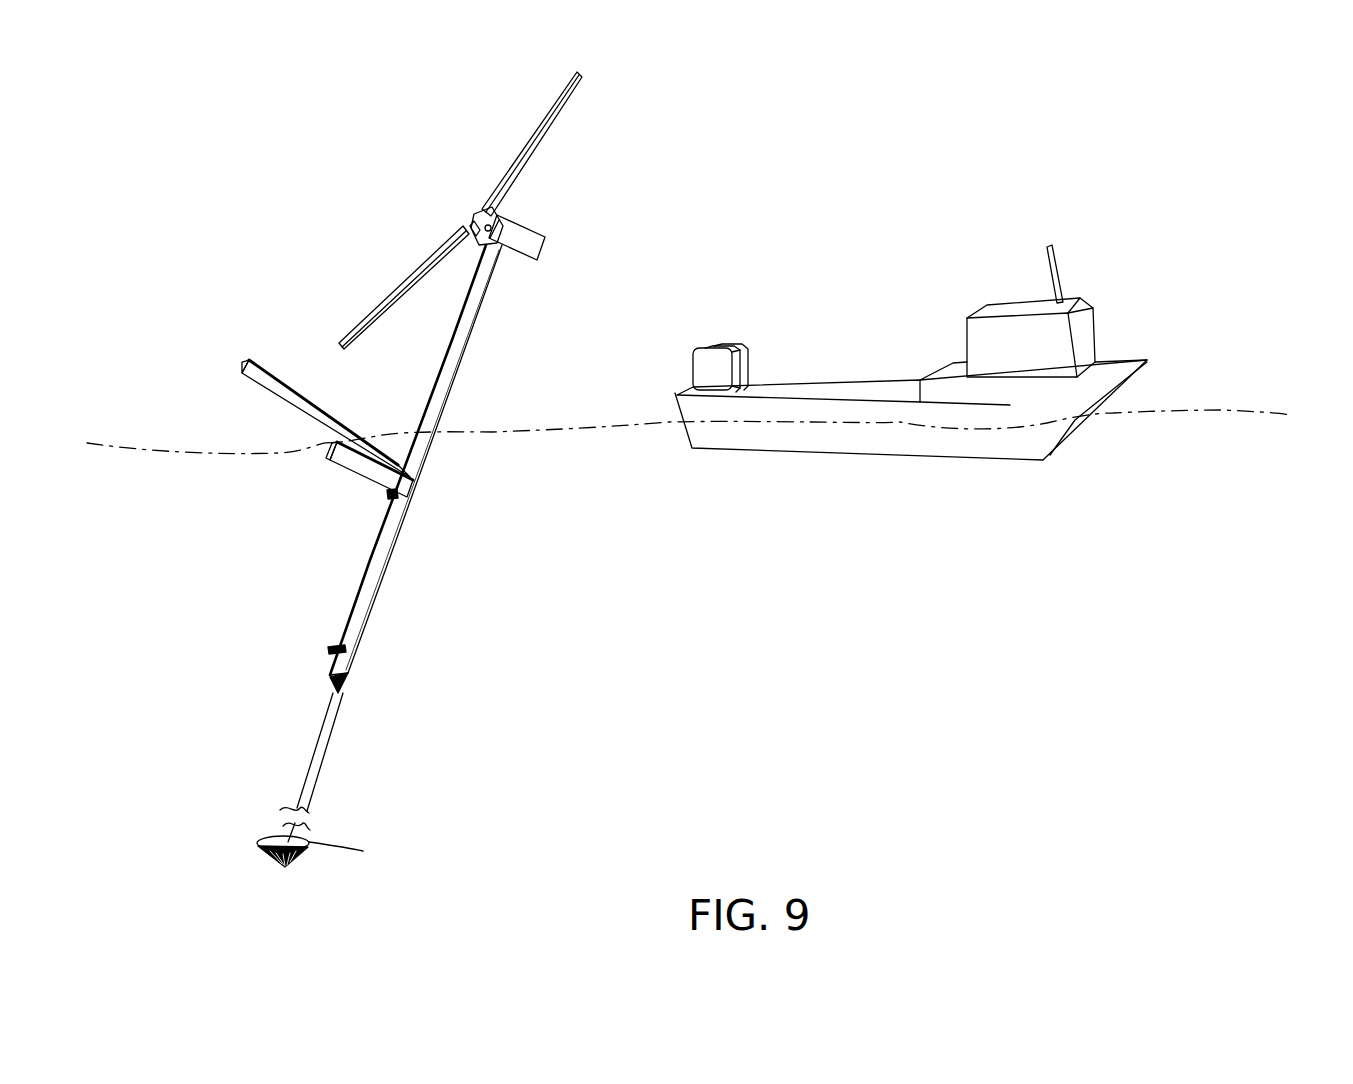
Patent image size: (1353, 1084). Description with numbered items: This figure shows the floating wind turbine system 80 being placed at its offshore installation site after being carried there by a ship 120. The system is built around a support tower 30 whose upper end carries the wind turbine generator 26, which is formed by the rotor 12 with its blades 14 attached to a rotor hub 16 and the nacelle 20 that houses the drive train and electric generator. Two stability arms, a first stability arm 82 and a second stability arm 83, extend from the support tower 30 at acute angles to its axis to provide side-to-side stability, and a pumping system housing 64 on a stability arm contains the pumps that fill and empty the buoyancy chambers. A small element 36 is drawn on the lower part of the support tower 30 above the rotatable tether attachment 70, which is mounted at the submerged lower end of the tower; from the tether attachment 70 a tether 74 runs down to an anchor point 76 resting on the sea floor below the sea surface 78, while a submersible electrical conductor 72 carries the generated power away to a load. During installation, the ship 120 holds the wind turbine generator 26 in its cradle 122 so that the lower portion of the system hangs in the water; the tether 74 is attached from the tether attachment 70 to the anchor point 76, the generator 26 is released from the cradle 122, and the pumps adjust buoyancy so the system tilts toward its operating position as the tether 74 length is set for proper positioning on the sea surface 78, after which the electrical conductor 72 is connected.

The wind turbine rotor 12 is at (472, 210).
The blades 14 is at (545, 125).
The rotor hub 16 is at (493, 219).
The nacelle 20 is at (537, 231).
The wind turbine generator 26 is at (509, 210).
The support tower 30 is at (473, 364).
The tower connector 36 is at (336, 644).
The pumping system housing 64 is at (383, 497).
The tether attachment 70 is at (345, 683).
The submersible electrical conductor 72 is at (323, 763).
The tether 74 is at (313, 767).
The anchor point 76 is at (263, 840).
The sea surface 78 is at (1205, 405).
The floating wind turbine system 80 is at (668, 238).
The first stability arm 82 is at (340, 470).
The second stability arm 83 is at (253, 383).
The ship 120 is at (1113, 358).
The cradle 122 is at (713, 375).